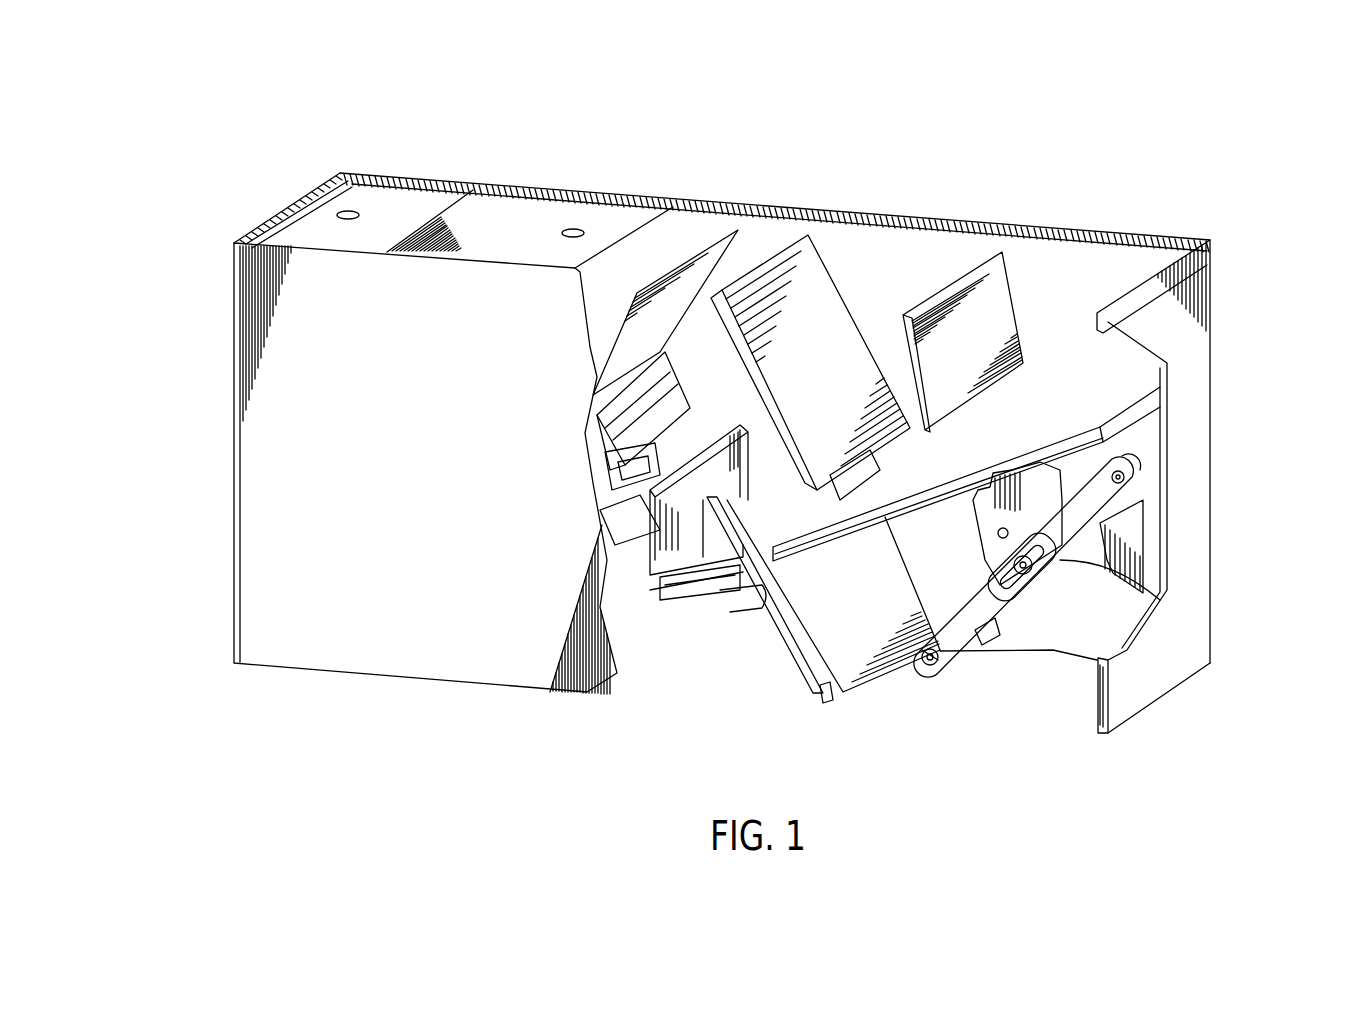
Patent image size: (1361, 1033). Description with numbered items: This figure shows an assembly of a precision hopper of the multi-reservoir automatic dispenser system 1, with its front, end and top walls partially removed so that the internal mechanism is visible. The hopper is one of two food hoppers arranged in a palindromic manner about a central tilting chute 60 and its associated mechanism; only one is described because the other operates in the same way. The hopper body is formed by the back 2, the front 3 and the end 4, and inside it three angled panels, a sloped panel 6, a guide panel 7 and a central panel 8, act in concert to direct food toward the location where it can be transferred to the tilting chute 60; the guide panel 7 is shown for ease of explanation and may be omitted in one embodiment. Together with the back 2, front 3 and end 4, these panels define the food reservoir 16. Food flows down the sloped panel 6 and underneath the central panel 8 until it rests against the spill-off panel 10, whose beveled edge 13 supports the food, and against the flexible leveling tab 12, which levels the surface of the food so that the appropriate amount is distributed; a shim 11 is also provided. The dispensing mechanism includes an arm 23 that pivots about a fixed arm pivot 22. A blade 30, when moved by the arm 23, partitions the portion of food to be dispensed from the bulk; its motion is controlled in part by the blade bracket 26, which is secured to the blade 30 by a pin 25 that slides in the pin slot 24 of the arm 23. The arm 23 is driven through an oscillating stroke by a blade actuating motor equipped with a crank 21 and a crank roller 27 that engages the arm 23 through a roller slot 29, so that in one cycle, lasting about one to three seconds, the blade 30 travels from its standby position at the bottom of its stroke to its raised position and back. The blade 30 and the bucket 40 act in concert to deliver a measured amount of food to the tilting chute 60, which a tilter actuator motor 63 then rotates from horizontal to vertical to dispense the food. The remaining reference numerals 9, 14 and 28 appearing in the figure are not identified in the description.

The multi-reservoir automatic dispenser system 1 is at (262, 127).
The back 2 is at (1143, 238).
The front 3 is at (365, 680).
The end 4 is at (277, 217).
The sloped panel 6 is at (1060, 410).
The guide panel 7 is at (960, 268).
The central panel 8 is at (760, 260).
The cover plate 9 is at (385, 200).
The spill-off panel 10 is at (810, 682).
The shim 11 is at (685, 403).
The flexible leveling tab 12 is at (630, 482).
The beveled edge 13 is at (602, 530).
The side flange 14 is at (1125, 362).
The food reservoir 16 is at (895, 246).
The crank 21 is at (992, 553).
The fixed arm pivot 22 is at (1127, 480).
The arm 23 is at (1033, 568).
The pin slot 24 is at (940, 668).
The pin 25 is at (946, 662).
The blade bracket 26 is at (890, 672).
The crank roller 27 is at (1055, 563).
The stop 28 is at (985, 642).
The roller slot 29 is at (1010, 622).
The blade 30 is at (852, 692).
The bucket 40 is at (822, 695).
The tilting chute 60 is at (680, 555).
The tilter actuator motor 63 is at (710, 612).